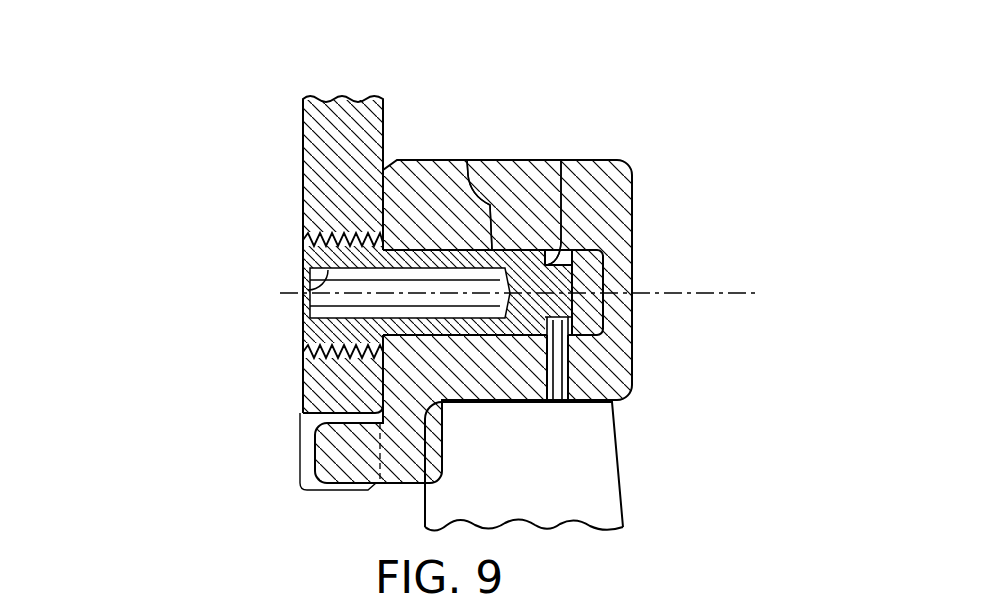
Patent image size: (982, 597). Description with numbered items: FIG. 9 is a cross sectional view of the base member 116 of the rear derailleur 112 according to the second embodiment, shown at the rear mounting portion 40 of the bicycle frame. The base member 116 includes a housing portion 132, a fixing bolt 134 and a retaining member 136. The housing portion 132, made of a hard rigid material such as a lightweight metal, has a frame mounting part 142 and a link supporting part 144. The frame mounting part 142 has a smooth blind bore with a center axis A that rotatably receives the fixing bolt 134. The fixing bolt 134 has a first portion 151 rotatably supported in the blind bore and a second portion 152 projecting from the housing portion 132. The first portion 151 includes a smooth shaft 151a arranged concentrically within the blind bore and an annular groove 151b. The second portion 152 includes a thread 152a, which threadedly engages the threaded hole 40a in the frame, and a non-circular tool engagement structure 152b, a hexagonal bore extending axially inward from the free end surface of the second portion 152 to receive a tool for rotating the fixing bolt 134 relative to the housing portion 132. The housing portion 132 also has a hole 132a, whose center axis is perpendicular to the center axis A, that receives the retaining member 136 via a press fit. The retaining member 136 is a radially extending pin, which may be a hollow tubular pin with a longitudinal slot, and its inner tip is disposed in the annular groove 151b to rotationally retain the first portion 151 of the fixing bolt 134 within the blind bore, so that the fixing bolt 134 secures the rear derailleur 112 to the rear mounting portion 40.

The rear mounting portion 40 is at (302, 162).
The threaded hole 40a is at (302, 256).
The rear derailleur 112 is at (697, 135).
The base member 116 is at (608, 105).
The housing portion 132 is at (601, 158).
The hole 132a is at (553, 400).
The fixing bolt 134 is at (601, 310).
The retaining member 136 is at (576, 367).
The frame mounting part 142 is at (632, 208).
The link supporting part 144 is at (622, 465).
The first portion 151 is at (590, 103).
The smooth shaft 151a is at (467, 160).
The annular groove 151b is at (561, 160).
The second portion 152 is at (160, 270).
The thread 152a is at (302, 380).
The non-circular tool engagement structure 152b is at (306, 294).
The center axis A is at (728, 293).